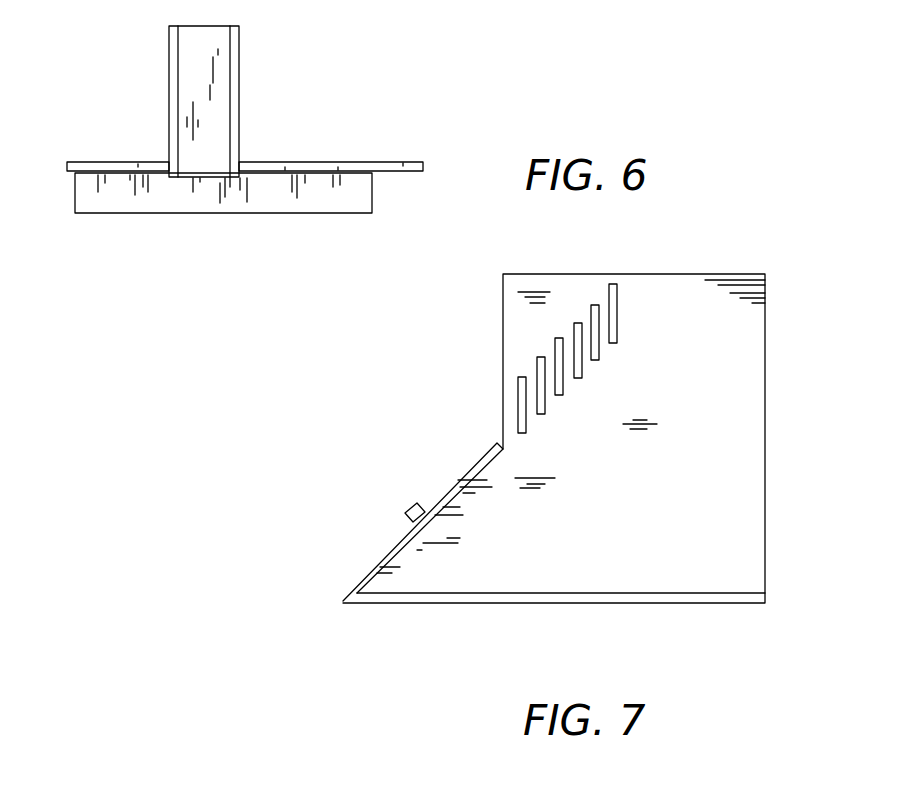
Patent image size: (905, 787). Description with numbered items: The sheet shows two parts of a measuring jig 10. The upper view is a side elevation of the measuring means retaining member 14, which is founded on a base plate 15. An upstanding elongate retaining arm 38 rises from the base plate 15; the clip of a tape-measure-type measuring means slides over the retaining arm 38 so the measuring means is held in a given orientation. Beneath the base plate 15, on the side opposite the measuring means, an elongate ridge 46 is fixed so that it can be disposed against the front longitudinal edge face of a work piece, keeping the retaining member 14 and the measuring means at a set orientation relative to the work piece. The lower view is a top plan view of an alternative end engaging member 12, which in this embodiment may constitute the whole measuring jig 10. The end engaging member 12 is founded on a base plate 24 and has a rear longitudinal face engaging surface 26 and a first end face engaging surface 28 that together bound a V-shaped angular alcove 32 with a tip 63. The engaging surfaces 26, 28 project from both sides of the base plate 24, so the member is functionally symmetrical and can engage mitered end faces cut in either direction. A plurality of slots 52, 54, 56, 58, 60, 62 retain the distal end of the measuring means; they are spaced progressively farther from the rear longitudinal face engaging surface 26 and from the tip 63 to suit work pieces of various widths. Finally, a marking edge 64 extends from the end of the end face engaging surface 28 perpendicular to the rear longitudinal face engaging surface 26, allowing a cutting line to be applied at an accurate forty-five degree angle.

In FIG. 7, the measuring jig 10 is at (297, 425).
In FIG. 7, the end engaging member 12 is at (784, 402).
In FIG. 6, the measuring means retaining member 14 is at (303, 100).
In FIG. 6, the base plate 15 is at (403, 162).
In FIG. 7, the base plate 24 is at (560, 552).
In FIG. 7, the rear longitudinal face engaging surface 26 is at (672, 603).
In FIG. 7, the first end face engaging surface 28 is at (390, 548).
In FIG. 7, the V-shaped angular alcove 32 is at (453, 572).
In FIG. 6, the retaining arm 38 is at (169, 76).
In FIG. 6, the elongate ridge 46 is at (122, 213).
In FIG. 7, the slot 52 is at (526, 420).
In FIG. 7, the slot 54 is at (545, 414).
In FIG. 7, the slot 56 is at (563, 395).
In FIG. 7, the slot 58 is at (582, 367).
In FIG. 7, the slot 60 is at (599, 348).
In FIG. 7, the slot 62 is at (617, 322).
In FIG. 7, the tip of the V-shaped angular alcove 63 is at (343, 601).
In FIG. 7, the marking edge 64 is at (503, 402).